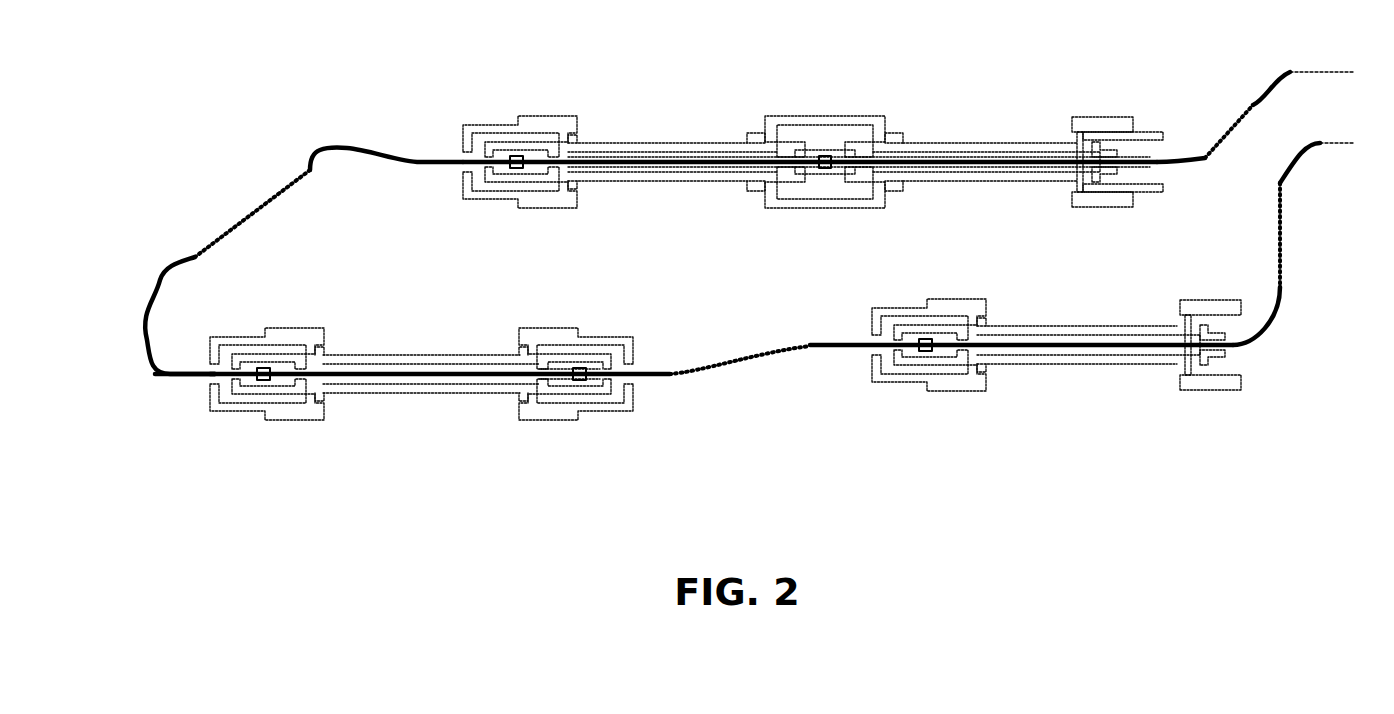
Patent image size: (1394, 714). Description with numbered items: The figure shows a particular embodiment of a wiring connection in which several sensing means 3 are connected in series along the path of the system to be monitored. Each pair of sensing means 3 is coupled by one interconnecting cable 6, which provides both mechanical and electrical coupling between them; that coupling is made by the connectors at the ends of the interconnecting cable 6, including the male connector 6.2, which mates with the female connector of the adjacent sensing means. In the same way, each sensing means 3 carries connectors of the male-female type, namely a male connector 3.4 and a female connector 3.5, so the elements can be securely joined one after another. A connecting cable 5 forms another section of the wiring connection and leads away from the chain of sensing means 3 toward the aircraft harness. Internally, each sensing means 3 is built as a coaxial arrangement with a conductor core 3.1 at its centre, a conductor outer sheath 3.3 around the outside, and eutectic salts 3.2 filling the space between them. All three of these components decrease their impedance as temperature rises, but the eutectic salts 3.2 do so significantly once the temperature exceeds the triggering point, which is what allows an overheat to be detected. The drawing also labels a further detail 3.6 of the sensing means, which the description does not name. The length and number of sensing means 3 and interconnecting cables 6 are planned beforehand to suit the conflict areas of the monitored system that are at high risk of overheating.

The sensing means 3 is at (725, 269).
The conductor core 3.1 is at (657, 164).
The eutectic salts 3.2 is at (606, 166).
The conductor outer sheath 3.3 is at (718, 180).
The male connector 3.4 is at (546, 418).
The female connector 3.5 is at (481, 135).
The inner sleeve 3.6 is at (597, 393).
The connecting cable 5 is at (1220, 128).
The interconnecting cable 6 is at (222, 210).
The male connector 6.2 is at (215, 388).